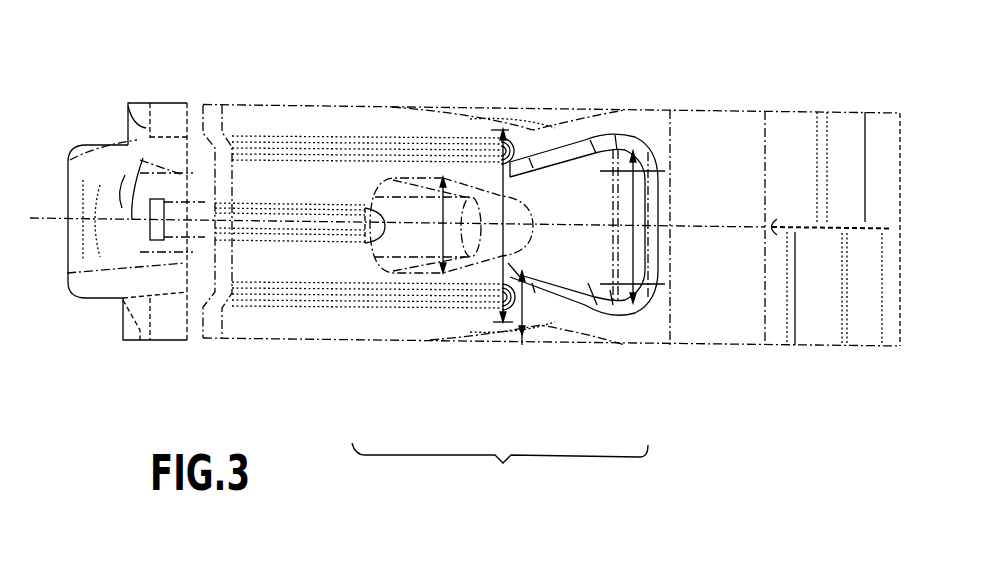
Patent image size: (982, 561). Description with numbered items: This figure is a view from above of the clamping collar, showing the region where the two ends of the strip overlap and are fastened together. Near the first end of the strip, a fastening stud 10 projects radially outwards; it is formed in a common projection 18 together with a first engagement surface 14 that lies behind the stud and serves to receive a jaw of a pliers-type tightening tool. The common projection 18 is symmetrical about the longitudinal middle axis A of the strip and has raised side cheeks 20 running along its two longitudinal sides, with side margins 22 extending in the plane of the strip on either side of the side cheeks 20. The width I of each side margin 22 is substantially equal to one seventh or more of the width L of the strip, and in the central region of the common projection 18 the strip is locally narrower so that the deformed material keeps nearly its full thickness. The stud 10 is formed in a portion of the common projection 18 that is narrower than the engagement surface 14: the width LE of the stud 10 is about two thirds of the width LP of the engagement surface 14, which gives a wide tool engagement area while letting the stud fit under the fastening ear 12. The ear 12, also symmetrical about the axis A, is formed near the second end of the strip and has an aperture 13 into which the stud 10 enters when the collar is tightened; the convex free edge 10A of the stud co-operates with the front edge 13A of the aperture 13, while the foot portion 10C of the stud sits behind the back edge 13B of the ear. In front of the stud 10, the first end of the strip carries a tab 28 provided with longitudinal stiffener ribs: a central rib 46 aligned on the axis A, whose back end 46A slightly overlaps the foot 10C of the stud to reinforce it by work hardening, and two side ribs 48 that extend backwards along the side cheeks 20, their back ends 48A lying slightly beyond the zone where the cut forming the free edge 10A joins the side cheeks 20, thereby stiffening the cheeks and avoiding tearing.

The fastening stud 10 is at (432, 185).
The free edge of the stud 10A is at (520, 222).
The foot portion of the stud 10C is at (393, 177).
The fastening ear 12 is at (77, 297).
The aperture 13 is at (143, 138).
The front edge of the aperture 13A is at (176, 190).
The back edge of the ear 13B is at (95, 206).
The first engagement surface 14 is at (648, 208).
The common projection 18 is at (500, 468).
The side cheeks 20 is at (463, 167).
The side margins 22 is at (577, 118).
The tab 28 is at (297, 120).
The central rib 46 is at (252, 213).
The back end of the central rib 46A is at (367, 222).
The side ribs 48 is at (262, 143).
The back ends of the side ribs 48A is at (495, 168).
The longitudinal middle axis A is at (704, 226).
The width of the stud LE is at (420, 225).
The width of the engagement surface LP is at (634, 252).
The width of the strip L is at (500, 323).
The width of each side margin I is at (519, 340).